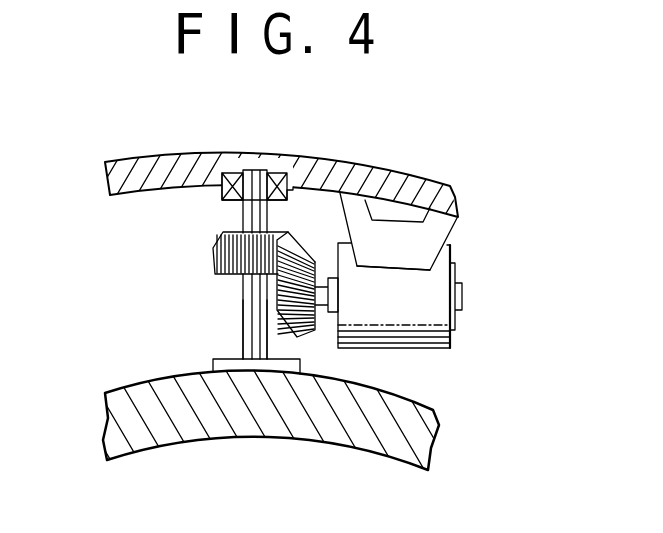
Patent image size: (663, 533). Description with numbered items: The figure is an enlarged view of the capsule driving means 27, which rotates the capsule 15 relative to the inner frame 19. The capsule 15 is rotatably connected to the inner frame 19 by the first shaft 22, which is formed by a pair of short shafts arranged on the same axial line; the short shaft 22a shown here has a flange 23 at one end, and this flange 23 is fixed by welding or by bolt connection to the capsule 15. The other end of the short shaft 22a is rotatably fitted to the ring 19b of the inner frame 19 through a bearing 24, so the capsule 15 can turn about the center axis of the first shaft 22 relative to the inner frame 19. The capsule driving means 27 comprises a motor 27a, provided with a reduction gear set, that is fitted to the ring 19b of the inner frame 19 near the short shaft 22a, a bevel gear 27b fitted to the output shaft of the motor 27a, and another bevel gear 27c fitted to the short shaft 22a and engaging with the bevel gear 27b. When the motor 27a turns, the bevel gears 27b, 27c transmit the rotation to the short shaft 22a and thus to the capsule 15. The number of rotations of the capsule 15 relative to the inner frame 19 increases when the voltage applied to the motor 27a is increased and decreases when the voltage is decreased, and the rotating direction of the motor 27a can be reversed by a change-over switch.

The capsule 15 is at (266, 418).
The inner frame 19 is at (182, 153).
The ring 19b is at (345, 177).
The first shaft 22 is at (243, 305).
The short shaft 22a is at (243, 337).
The flange 23 is at (213, 368).
The bearing 24 is at (236, 196).
The capsule driving means 27 is at (457, 337).
The motor 27a is at (418, 290).
The bevel gear 27b is at (314, 320).
The bevel gear 27c is at (222, 241).